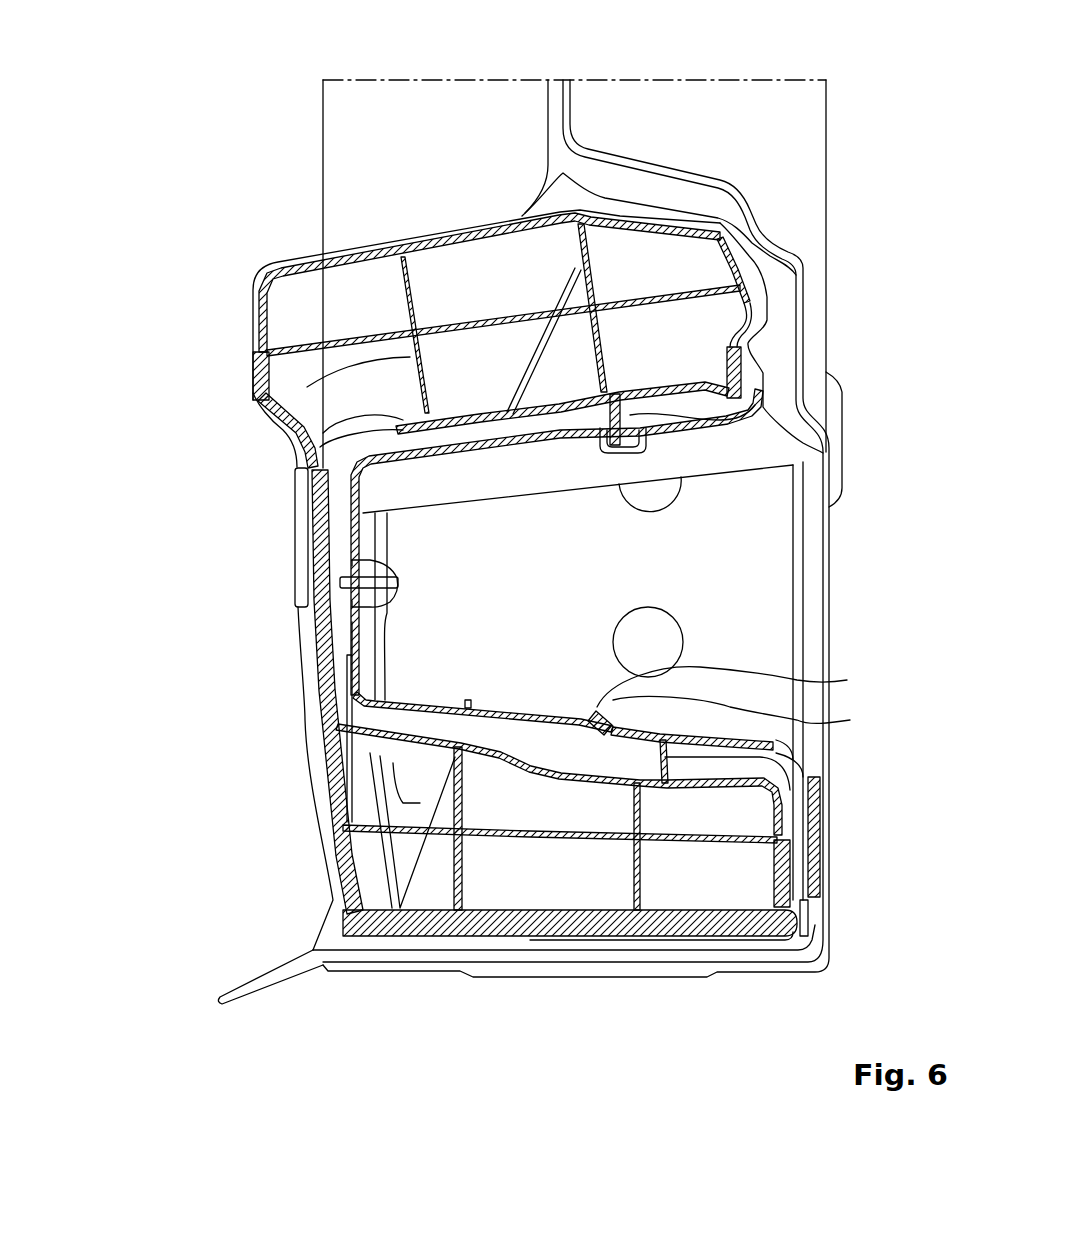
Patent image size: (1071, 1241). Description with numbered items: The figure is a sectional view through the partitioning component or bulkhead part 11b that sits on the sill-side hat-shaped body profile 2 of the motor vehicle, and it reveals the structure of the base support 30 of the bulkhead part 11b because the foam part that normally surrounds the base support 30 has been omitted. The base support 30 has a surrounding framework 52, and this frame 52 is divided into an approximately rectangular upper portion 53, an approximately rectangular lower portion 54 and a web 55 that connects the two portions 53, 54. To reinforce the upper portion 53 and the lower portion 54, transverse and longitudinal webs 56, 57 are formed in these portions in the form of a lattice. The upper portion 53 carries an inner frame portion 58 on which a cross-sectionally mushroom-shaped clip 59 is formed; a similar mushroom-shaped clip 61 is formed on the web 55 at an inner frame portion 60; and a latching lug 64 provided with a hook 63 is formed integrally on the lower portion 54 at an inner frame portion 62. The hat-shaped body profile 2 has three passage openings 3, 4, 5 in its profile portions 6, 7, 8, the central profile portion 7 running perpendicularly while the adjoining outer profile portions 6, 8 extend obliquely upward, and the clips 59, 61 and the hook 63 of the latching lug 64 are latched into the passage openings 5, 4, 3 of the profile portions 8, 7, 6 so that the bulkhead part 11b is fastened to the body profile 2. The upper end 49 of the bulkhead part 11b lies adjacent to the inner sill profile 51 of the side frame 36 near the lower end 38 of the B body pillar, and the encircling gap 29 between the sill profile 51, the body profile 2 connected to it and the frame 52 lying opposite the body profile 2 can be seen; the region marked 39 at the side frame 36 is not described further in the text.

The body profile 2 is at (557, 586).
The passage opening 3 is at (766, 681).
The passage opening 4 is at (266, 773).
The passage opening 5 is at (825, 341).
The profile portion 6 is at (766, 681).
The central profile portion 7 is at (347, 597).
The profile portion 8 is at (783, 428).
The bulkhead part 11b is at (479, 520).
The gap 29 is at (753, 270).
The base support 30 is at (479, 322).
The side frame 36 is at (574, 239).
The lower end 38 is at (574, 239).
The frame region 39 is at (378, 100).
The upper end 49 is at (560, 198).
The inner sill profile 51 is at (727, 182).
The framework 52 is at (479, 619).
The upper portion 53 is at (258, 298).
The lower portion 54 is at (514, 864).
The web 55 is at (494, 651).
The transverse web 56 is at (268, 402).
The longitudinal web 57 is at (300, 343).
The inner frame portion 58 is at (310, 440).
The clip 59 is at (620, 455).
The inner frame portion 60 is at (330, 567).
The clip 61 is at (397, 583).
The inner frame portion 62 is at (330, 857).
The hook 63 is at (758, 657).
The latching lug 64 is at (758, 657).